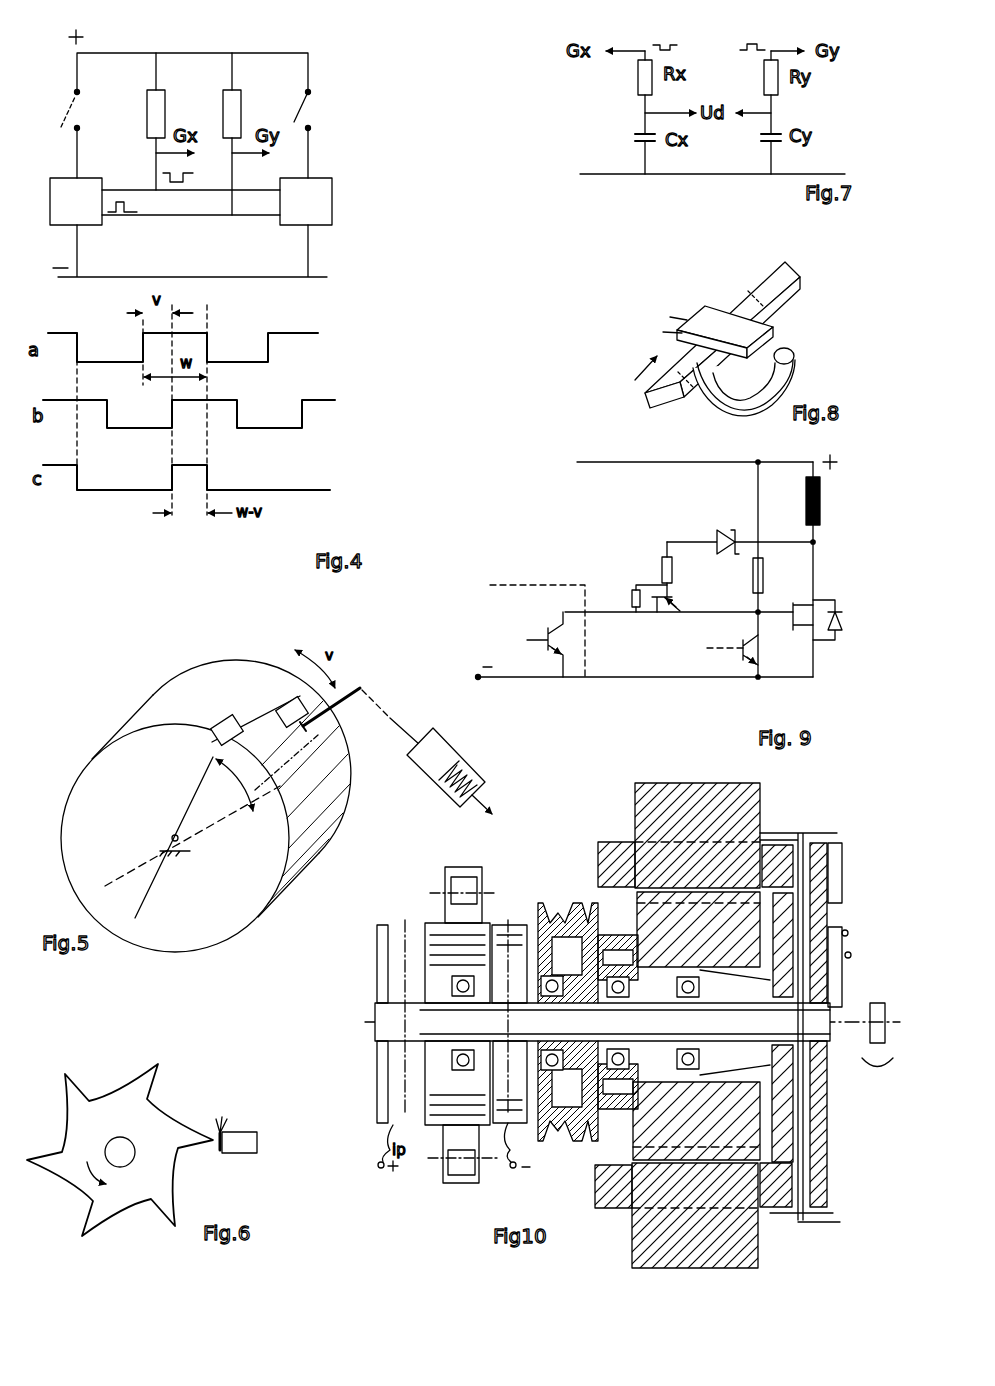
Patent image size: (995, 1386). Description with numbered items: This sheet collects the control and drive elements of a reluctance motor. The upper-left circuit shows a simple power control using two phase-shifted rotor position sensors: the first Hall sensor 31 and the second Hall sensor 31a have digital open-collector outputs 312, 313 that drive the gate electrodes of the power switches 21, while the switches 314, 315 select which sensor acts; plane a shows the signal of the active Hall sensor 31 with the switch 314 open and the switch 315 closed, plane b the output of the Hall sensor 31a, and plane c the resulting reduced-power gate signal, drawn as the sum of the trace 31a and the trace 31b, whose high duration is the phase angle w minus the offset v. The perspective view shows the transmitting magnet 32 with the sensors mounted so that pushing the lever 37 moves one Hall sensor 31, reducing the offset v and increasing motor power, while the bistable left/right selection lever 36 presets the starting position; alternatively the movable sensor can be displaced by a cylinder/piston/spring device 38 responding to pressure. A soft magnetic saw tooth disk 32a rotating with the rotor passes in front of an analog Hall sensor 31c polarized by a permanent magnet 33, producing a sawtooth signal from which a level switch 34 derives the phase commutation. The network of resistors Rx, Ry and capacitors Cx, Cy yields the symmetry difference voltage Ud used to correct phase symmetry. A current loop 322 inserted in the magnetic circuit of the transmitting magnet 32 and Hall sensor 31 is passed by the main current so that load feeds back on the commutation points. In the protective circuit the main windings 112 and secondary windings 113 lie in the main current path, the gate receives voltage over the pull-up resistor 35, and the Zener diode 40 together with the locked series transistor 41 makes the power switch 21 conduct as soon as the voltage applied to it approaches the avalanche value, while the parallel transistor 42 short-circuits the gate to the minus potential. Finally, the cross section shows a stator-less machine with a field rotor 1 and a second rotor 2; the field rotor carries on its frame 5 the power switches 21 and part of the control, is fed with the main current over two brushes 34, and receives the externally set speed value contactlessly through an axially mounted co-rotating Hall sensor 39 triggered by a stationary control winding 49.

In FIG. 10, the field rotor 1 is at (694, 1025).
In FIG. 10, the second rotor 2 is at (696, 1026).
In FIG. 10, the frame 5 is at (746, 1027).
In FIG. 9, the power switches 21 is at (818, 632).
In FIG. 10, the power switches 21 is at (842, 878).
In FIG. 4, the Hall sensor 31 is at (207, 270).
In FIG. 8, the Hall sensor 31 is at (657, 328).
In FIG. 9, the Hall sensor 31 is at (537, 631).
In FIG. 5, the Hall sensor 31 is at (282, 718).
In FIG. 4, the second Hall sensor 31a is at (207, 303).
In FIG. 5, the second Hall sensor 31a is at (222, 730).
In FIG. 4, the combined sensor signal 31b is at (216, 487).
In FIG. 6, the analog Hall sensor 31c is at (223, 1153).
In FIG. 8, the transmitting magnet 32 is at (724, 327).
In FIG. 5, the transmitting magnet 32 is at (204, 668).
In FIG. 6, the saw tooth disk 32a is at (120, 1150).
In FIG. 6, the permanent magnet 33 is at (244, 1152).
In FIG. 10, the brushes 34 is at (461, 1025).
In FIG. 9, the polarization pull-up resistor 35 is at (772, 575).
In FIG. 5, the left/right selection lever 36 is at (209, 758).
In FIG. 5, the lever 37 is at (347, 686).
In FIG. 5, the cylinder/piston/spring device 38 is at (427, 752).
In FIG. 10, the rotating Hall sensor 39 is at (849, 1003).
In FIG. 9, the Zener diode 40 is at (740, 527).
In FIG. 9, the series transistor 41 is at (670, 577).
In FIG. 9, the parallel transistor 42 is at (748, 650).
In FIG. 10, the control winding 49 is at (877, 1051).
In FIG. 9, the main windings 112 is at (839, 502).
In FIG. 9, the secondary windings 113 is at (855, 515).
In FIG. 4, the Hall sensor output 312 is at (147, 121).
In FIG. 4, the Hall sensor output 313 is at (224, 134).
In FIG. 4, the switch 314 is at (65, 96).
In FIG. 4, the switch 315 is at (296, 94).
In FIG. 8, the current loop 322 is at (787, 357).